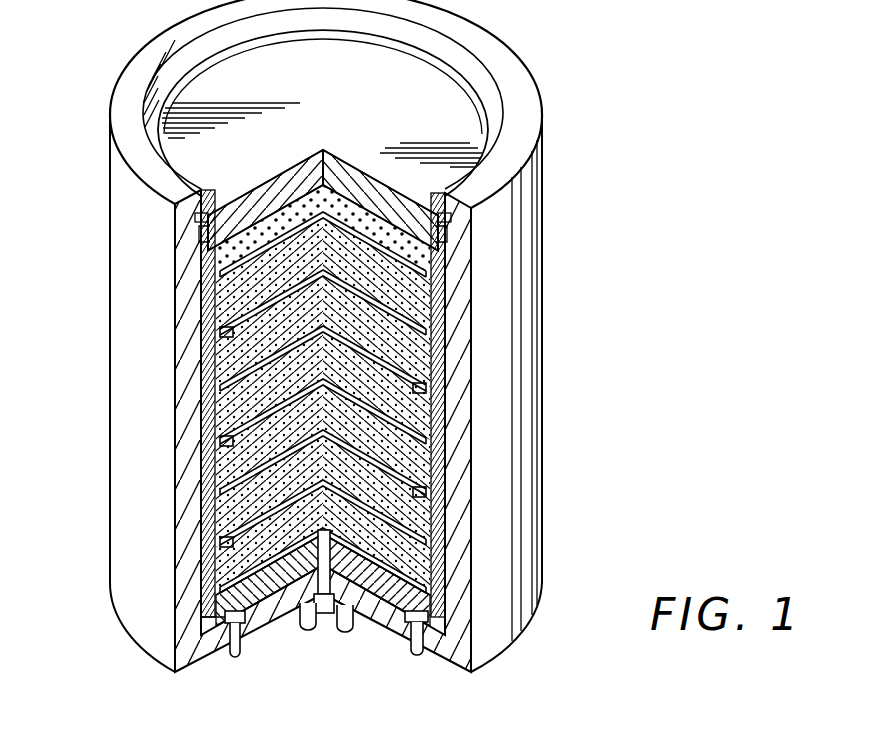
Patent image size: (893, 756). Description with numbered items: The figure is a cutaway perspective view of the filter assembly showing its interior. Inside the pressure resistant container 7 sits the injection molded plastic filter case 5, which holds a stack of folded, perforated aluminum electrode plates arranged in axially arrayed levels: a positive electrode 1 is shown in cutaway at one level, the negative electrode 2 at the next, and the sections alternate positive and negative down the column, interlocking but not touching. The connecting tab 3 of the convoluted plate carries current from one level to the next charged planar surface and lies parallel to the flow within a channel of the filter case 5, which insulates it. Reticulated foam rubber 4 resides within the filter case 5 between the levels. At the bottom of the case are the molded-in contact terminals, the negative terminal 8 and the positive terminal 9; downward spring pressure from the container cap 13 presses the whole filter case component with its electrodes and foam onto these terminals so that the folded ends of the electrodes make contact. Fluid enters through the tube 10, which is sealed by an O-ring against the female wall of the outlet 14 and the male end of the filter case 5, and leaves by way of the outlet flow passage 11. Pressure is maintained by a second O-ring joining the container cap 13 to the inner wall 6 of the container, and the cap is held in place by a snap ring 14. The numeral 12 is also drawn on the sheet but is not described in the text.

The positive electrode 1 is at (372, 225).
The negative electrode 2 is at (432, 290).
The connecting tab 3 is at (430, 362).
The reticulated foam rubber 4 is at (423, 403).
The filter case 5 is at (437, 465).
The inner wall of the container 6 is at (344, 583).
The pressure resistant container 7 is at (505, 558).
The negative contact terminal 8 is at (416, 652).
The positive contact terminal 9 is at (230, 657).
The inlet tube 10 is at (320, 615).
The outlet flow passage 11 is at (205, 327).
The seal ring 12 is at (200, 243).
The container cap 13 is at (196, 198).
The snap ring 14 is at (480, 107).